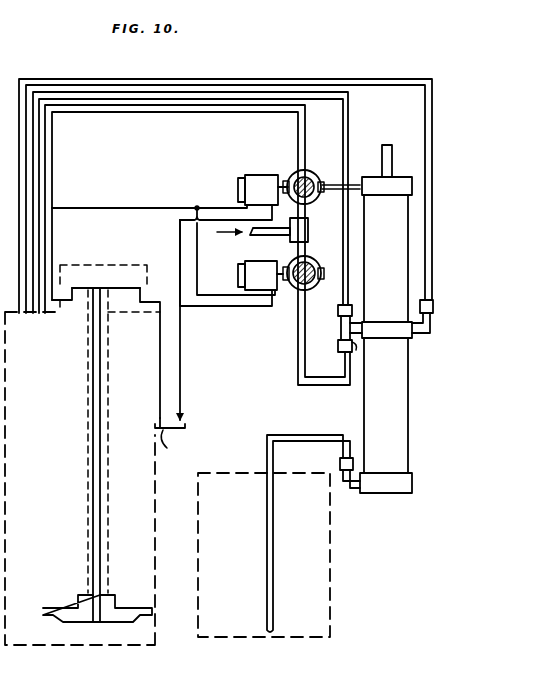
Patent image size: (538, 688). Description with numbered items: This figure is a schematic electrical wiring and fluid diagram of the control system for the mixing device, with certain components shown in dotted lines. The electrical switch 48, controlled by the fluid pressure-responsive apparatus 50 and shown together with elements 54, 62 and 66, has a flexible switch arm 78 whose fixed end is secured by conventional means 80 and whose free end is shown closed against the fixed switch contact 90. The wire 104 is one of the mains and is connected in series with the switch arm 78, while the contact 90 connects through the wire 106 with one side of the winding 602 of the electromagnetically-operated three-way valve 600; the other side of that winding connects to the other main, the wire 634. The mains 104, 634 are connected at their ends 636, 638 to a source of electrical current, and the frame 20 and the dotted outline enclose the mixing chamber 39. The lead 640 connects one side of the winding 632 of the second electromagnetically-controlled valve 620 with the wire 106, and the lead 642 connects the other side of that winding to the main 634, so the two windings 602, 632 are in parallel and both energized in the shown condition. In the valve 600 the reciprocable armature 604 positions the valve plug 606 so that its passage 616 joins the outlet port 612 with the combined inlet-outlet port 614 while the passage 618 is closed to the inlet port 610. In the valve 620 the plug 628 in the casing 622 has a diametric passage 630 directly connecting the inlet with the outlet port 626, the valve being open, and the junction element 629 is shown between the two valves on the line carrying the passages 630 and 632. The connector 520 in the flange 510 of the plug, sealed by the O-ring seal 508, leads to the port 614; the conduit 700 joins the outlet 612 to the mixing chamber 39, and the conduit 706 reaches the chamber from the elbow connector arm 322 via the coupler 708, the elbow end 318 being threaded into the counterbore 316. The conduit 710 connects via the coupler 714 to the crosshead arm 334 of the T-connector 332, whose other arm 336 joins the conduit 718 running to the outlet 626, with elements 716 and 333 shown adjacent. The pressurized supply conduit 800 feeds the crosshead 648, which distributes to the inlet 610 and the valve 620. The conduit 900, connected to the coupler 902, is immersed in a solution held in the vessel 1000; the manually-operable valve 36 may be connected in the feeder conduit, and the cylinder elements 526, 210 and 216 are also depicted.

The machine frame 20 is at (6, 466).
The manually-operable valve 36 is at (2, 663).
The mixing chamber 39 is at (137, 525).
The electrical switch 48 is at (96, 284).
The fluid pressure-responsive apparatus 50 is at (60, 623).
The ram 54 is at (110, 580).
The lower edge 62 is at (80, 636).
The junction 66 is at (93, 623).
The switch arm 78 is at (113, 284).
The conventional means 80 is at (140, 289).
The second fixed switch contact 90 is at (71, 291).
The wire 104 is at (160, 348).
The wire 106 is at (80, 207).
The cylinder end cap 210 is at (413, 484).
The inlet port 216 is at (352, 489).
The internally-threaded counterbore 316 is at (8, 450).
The end of elbow connector 318 is at (8, 482).
The other end of elbow connector 322 is at (434, 313).
The T-connector 332 is at (338, 345).
The bleed passage 333 is at (356, 350).
The crosshead arm 334 is at (352, 321).
The other arm 336 is at (344, 372).
The O-ring seal 508 is at (8, 392).
The cylindrical flange 510 is at (413, 187).
The connector 520 is at (348, 174).
The piston rod 526 is at (392, 162).
The electromagnetically-operated three-way valve 600 is at (311, 174).
The winding 602 is at (247, 173).
The reciprocable armature 604 is at (289, 179).
The valve plug 606 is at (300, 206).
The inlet port 610 is at (308, 208).
The outlet port 612 is at (306, 170).
The combined inlet-outlet port 614 is at (322, 187).
The passage 616 is at (261, 190).
The passage 618 is at (270, 239).
The second electromagnetically-controlled valve 620 is at (308, 254).
The casing 622 is at (299, 293).
The outlet port 626 is at (310, 292).
The valve plug 628 is at (294, 289).
The junction block 629 is at (309, 240).
The passage 630 is at (287, 266).
The valve winding 632 is at (252, 256).
The wire 634 is at (181, 375).
The end of main 636 is at (174, 436).
The end of main 638 is at (185, 418).
The lead 640 is at (198, 276).
The lead 642 is at (232, 307).
The crosshead 648 is at (312, 180).
The conduit 700 is at (234, 112).
The conduit 706 is at (432, 118).
The coupler 708 is at (434, 304).
The conduit 710 is at (349, 106).
The coupler 714 is at (340, 329).
The upper fitting 716 is at (338, 311).
The conduit 718 is at (320, 387).
The conduit 800 is at (248, 236).
The conduit 900 is at (328, 434).
The coupler 902 is at (354, 462).
The vessel 1000 is at (332, 558).